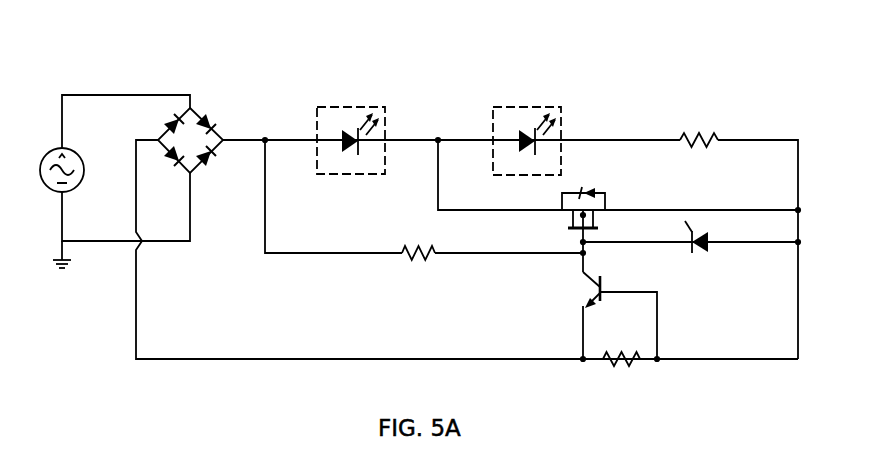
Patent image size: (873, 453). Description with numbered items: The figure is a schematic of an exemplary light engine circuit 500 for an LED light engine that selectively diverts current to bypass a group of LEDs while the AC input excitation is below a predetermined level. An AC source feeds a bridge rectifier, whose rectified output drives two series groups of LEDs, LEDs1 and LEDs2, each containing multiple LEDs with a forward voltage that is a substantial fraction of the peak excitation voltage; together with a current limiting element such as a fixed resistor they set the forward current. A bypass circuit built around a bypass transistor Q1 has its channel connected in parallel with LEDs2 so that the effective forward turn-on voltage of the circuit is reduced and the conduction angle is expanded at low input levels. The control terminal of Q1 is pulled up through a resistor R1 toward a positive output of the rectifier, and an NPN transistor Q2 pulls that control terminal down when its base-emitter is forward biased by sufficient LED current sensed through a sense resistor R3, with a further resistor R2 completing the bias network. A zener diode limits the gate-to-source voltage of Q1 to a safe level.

The LED driver circuit 500 is at (128, 58).
The first group of LEDs LEDs1 is at (352, 117).
The second group of LEDs LEDs2 is at (523, 118).
The resistor R1 is at (699, 125).
The resistor R2 is at (418, 242).
The resistor R3 is at (621, 348).
The transistor Q1 is at (599, 199).
The transistor Q2 is at (610, 283).